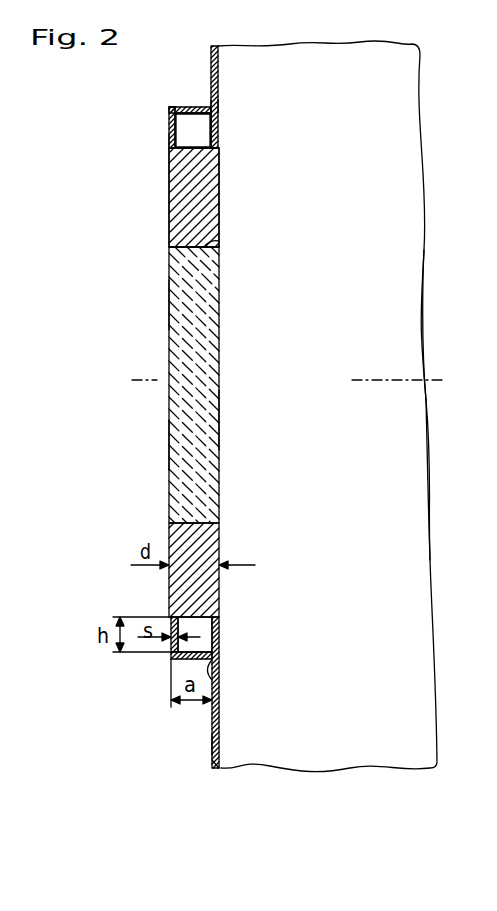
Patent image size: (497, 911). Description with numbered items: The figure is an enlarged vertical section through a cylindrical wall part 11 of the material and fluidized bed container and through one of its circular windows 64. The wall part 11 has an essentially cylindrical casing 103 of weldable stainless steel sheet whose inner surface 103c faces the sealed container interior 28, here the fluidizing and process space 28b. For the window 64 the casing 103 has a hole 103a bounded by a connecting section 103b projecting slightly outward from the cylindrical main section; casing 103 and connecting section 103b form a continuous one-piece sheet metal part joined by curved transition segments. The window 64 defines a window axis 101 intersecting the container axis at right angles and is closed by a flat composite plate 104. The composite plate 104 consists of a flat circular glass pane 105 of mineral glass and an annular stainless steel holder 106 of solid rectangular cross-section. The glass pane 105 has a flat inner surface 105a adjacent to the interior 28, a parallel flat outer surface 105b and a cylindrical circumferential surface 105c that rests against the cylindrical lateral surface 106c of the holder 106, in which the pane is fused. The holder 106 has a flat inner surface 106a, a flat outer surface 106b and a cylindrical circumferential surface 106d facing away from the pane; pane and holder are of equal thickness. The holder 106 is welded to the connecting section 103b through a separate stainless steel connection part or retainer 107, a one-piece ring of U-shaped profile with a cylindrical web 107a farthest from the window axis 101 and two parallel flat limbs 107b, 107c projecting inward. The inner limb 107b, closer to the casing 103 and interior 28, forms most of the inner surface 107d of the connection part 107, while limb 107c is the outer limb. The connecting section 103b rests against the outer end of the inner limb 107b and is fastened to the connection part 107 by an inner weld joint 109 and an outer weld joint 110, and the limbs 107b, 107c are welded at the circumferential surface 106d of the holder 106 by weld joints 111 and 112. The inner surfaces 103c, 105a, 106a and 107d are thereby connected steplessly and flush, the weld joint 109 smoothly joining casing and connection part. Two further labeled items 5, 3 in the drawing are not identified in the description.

The wall part 11 is at (218, 48).
The container interior 28 is at (413, 320).
The fluidizing and process space 28b is at (413, 355).
The window axis 101 is at (380, 382).
The casing 103 is at (210, 104).
The hole 103a is at (218, 108).
The connecting section 103b is at (209, 105).
The inner surface 103c is at (222, 732).
The connection part 107 is at (168, 125).
The cylindrical web 107a is at (168, 108).
The inner limb 107b is at (218, 122).
The outer limb 107c is at (168, 140).
The inner surface 107d is at (218, 128).
The holder 106 is at (168, 240).
The inner surface 106a is at (218, 200).
The outer surface 106b is at (168, 207).
The lateral surface 106c is at (218, 258).
The circumferential surface 106d is at (218, 138).
The glass pane 105 is at (180, 403).
The inner surface 105a is at (220, 418).
The outer surface 105b is at (168, 440).
The circumferential surface 105c is at (218, 232).
The window 64 is at (168, 302).
The composite plate 104 is at (168, 487).
The weld joint 112 is at (170, 615).
The weld joint 111 is at (221, 613).
The weld joint 109 is at (221, 657).
The weld joint 110 is at (221, 678).
The wall 5 is at (212, 745).
The bottom 3 is at (215, 767).